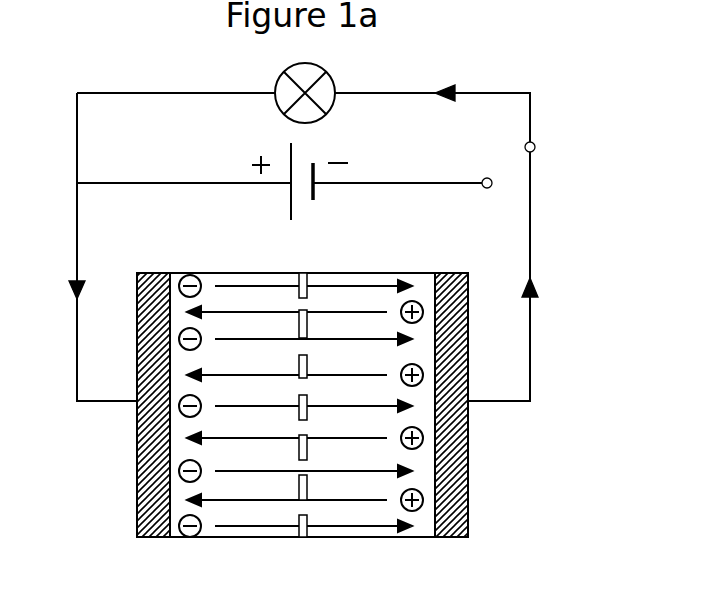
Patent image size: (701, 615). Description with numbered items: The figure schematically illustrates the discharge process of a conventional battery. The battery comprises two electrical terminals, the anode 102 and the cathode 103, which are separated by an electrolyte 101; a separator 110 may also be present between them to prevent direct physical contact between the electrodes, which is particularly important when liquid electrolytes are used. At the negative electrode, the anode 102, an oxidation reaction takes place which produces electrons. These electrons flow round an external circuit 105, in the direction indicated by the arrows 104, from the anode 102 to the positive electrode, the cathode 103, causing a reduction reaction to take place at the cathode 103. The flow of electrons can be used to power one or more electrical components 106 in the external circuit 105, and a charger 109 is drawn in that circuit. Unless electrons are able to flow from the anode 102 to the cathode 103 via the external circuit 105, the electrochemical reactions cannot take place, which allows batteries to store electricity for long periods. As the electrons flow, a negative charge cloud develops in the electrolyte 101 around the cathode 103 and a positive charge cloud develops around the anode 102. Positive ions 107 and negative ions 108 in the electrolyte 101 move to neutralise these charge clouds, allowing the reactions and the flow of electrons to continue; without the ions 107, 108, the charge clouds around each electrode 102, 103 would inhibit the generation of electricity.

The electrolyte 101 is at (258, 513).
The anode 102 is at (452, 488).
The cathode 103 is at (137, 495).
The arrows 104 is at (445, 85).
The external circuit 105 is at (133, 91).
The electrical component 106 is at (287, 88).
The positive ions 107 is at (418, 505).
The negative ions 108 is at (187, 537).
The charger 109 is at (335, 198).
The separator 110 is at (305, 528).